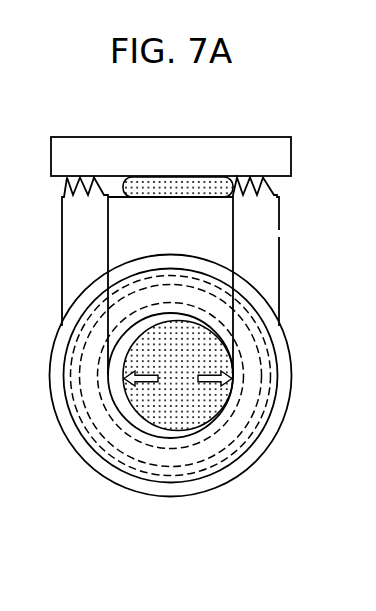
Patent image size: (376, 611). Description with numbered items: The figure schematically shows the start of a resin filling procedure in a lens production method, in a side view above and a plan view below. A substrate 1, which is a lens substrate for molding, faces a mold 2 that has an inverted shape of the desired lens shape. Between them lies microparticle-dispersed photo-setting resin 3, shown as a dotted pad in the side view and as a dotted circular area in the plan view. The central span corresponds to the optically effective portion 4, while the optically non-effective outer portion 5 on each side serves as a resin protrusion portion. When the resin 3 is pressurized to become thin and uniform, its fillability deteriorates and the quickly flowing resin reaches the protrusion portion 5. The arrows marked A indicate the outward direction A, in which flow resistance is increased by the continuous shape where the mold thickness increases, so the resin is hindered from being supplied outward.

The substrate 1 is at (285, 158).
The mold 2 is at (82, 233).
The microparticle-dispersed photo-setting resin 3 is at (183, 190).
The optically effective portion 4 is at (108, 219).
The optically non-effective outer portion 5 is at (108, 219).
The outward direction A is at (232, 376).